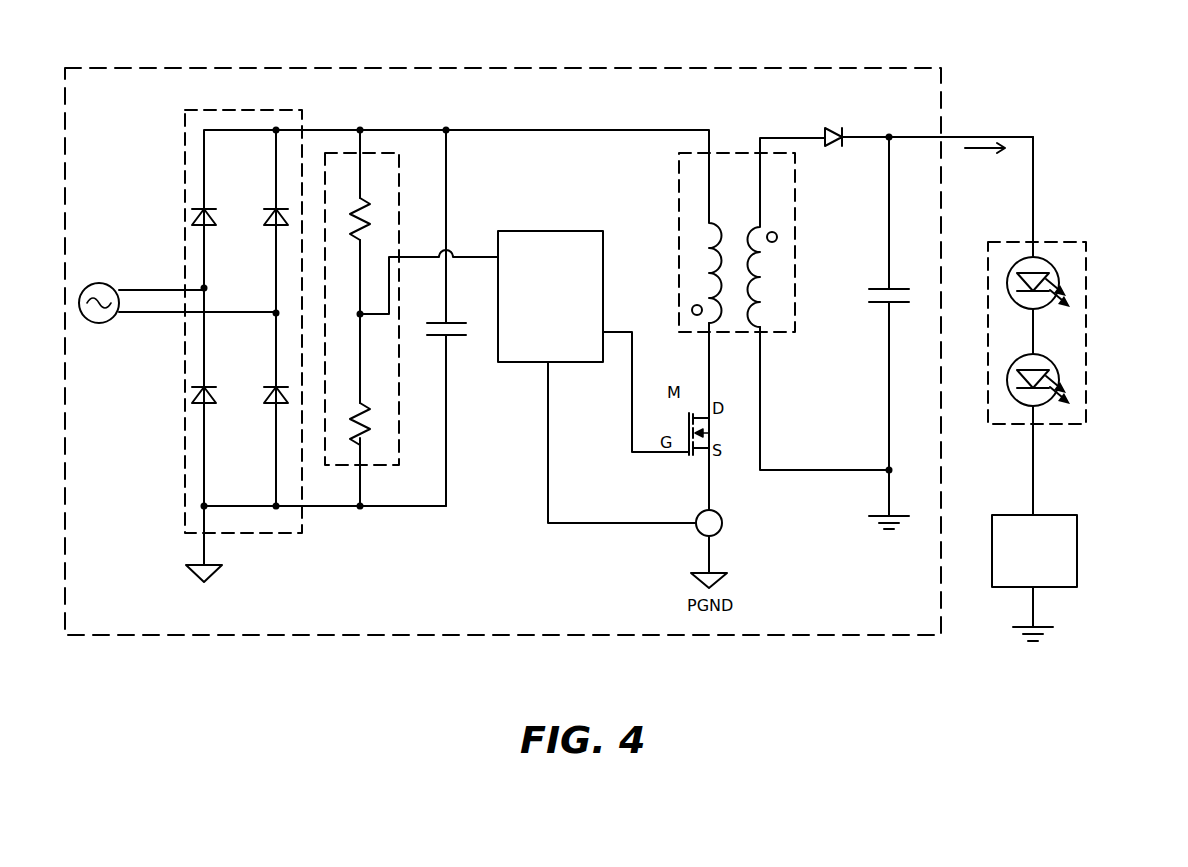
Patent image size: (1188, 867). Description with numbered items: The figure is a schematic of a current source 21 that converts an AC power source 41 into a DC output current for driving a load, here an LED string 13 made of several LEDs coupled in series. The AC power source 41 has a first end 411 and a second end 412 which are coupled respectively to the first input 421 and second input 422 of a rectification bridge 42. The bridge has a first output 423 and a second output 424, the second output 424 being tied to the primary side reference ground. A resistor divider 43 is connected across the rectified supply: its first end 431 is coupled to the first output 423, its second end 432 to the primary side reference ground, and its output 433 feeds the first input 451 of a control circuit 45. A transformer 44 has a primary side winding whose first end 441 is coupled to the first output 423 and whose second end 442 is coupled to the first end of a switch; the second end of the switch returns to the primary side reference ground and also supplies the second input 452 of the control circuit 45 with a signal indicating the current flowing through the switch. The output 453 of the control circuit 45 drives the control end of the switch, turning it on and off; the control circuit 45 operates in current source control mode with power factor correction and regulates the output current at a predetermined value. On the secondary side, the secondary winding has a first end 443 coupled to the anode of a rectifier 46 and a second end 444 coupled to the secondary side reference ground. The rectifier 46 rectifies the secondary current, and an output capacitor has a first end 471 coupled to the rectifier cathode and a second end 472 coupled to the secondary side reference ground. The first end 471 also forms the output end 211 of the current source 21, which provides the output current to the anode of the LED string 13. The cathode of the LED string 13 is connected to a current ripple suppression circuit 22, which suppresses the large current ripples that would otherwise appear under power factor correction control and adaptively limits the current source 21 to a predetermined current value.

The current source 21 is at (941, 68).
The output end 211 is at (941, 136).
The LED string 13 is at (1087, 242).
The current ripple suppression circuit 22 is at (1077, 515).
The AC power source 41 is at (91, 283).
The first end 411 is at (117, 288).
The second end 412 is at (118, 318).
The rectification bridge 42 is at (233, 110).
The first input 421 is at (186, 290).
The second input 422 is at (186, 315).
The first output 423 is at (302, 130).
The second output 424 is at (205, 545).
The resistor divider 43 is at (398, 372).
The first end 431 is at (362, 152).
The second end 432 is at (363, 465).
The output 433 is at (398, 260).
The transformer 44 is at (678, 210).
The first end 441 is at (708, 153).
The second end 442 is at (710, 333).
The first end 443 is at (758, 153).
The second end 444 is at (762, 333).
The control circuit 45 is at (578, 231).
The first input 451 is at (497, 255).
The second input 452 is at (548, 362).
The output 453 is at (604, 330).
The rectifier 46 is at (831, 131).
The first end 471 is at (885, 289).
The second end 472 is at (888, 305).